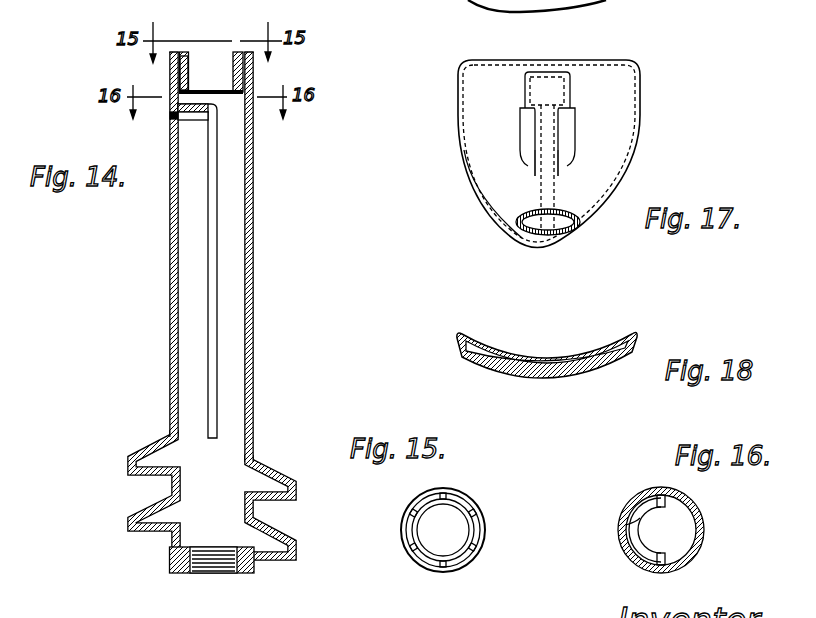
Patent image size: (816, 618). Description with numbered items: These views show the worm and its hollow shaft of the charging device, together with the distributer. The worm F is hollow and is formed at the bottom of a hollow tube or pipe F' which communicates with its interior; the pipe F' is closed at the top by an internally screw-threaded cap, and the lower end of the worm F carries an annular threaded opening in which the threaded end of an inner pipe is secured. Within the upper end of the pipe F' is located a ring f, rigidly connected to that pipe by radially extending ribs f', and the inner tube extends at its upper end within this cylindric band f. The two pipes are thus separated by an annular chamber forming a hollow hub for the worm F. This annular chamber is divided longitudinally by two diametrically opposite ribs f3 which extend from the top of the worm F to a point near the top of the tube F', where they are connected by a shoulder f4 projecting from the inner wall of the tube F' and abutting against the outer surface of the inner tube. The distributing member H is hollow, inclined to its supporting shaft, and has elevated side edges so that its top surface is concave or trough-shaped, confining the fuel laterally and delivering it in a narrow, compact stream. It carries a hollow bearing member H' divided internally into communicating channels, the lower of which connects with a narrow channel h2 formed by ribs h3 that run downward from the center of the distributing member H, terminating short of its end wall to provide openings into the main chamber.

In FIG. 14, the worm F is at (196, 491).
In FIG. 14, the hollow tube or pipe F' is at (226, 257).
In FIG. 15, the hollow tube or pipe F' is at (419, 530).
In FIG. 16, the hollow tube or pipe F' is at (676, 530).
In FIG. 14, the ring f is at (211, 46).
In FIG. 15, the ring f is at (443, 511).
In FIG. 14, the radially extending ribs f' is at (133, 73).
In FIG. 15, the radially extending ribs f' is at (456, 530).
In FIG. 14, the ribs f3 is at (212, 148).
In FIG. 16, the ribs f3 is at (668, 493).
In FIG. 14, the shoulder f4 is at (172, 118).
In FIG. 16, the shoulder f4 is at (628, 518).
In FIG. 17, the distributing member H is at (566, 153).
In FIG. 18, the distributing member H is at (547, 334).
In FIG. 17, the hollow bearing member H' is at (550, 127).
In FIG. 17, the narrow channel h2 is at (550, 218).
In FIG. 17, the ribs h3 is at (540, 173).